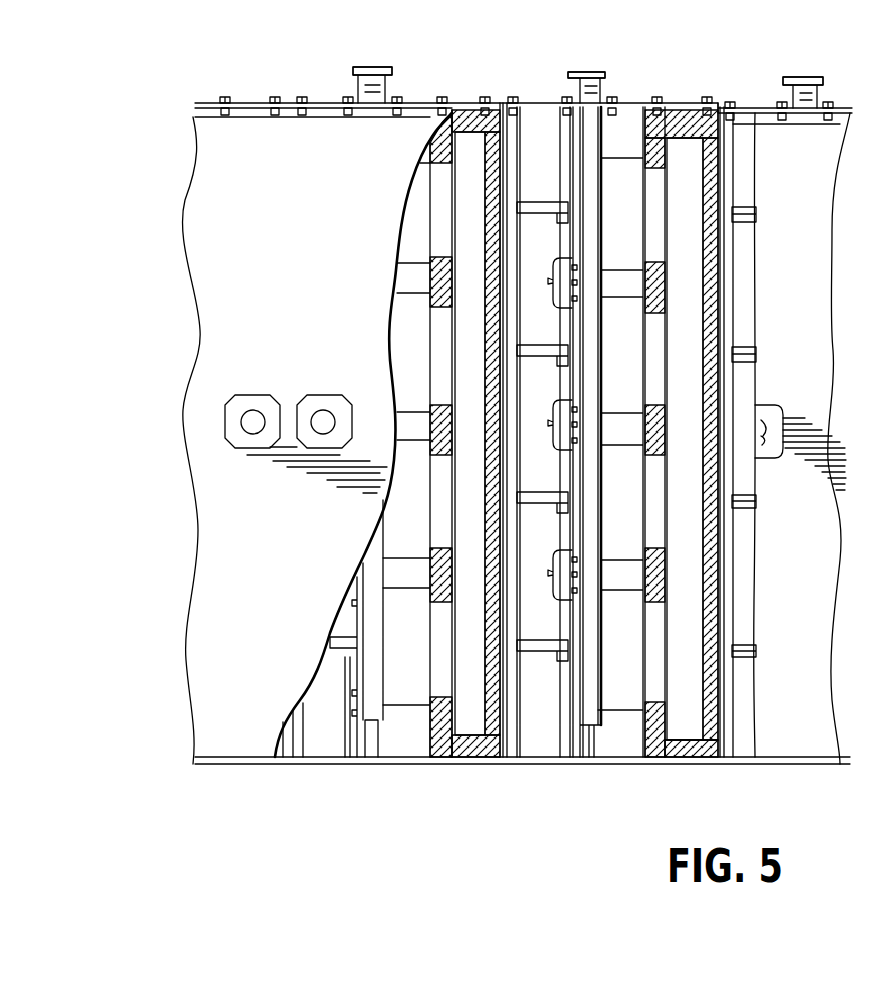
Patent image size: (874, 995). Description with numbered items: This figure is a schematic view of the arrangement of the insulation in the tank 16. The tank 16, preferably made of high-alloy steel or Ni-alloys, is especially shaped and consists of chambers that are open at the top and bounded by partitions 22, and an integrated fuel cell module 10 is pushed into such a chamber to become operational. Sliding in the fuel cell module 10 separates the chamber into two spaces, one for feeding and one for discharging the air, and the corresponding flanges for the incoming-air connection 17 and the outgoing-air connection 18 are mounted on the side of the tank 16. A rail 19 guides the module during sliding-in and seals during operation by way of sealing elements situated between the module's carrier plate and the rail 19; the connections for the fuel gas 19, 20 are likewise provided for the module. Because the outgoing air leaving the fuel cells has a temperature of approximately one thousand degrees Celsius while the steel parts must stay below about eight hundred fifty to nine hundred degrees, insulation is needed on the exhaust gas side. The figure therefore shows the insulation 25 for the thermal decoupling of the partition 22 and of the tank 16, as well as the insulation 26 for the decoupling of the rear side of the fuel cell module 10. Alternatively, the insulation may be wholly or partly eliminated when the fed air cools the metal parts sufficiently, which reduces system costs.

The fuel cell module 10 is at (565, 692).
The tank 16 is at (218, 238).
The incoming-air connection 17 is at (243, 412).
The outgoing-air connection 18 is at (313, 432).
The rail 19 is at (605, 78).
The fuel gas connection 20 is at (605, 78).
The partition 22 is at (722, 383).
The insulation 25 is at (655, 575).
The insulation 26 is at (697, 127).